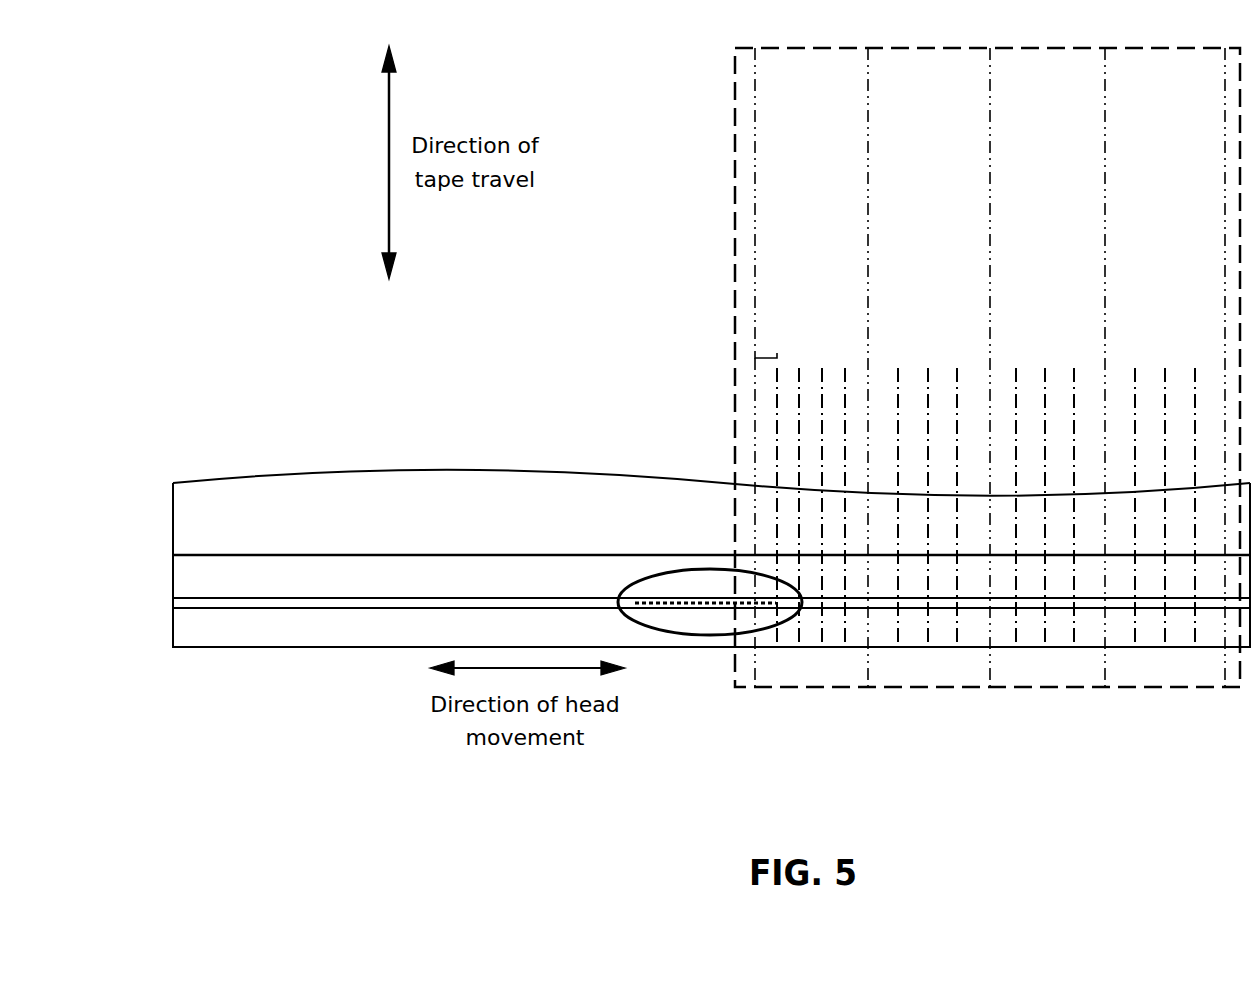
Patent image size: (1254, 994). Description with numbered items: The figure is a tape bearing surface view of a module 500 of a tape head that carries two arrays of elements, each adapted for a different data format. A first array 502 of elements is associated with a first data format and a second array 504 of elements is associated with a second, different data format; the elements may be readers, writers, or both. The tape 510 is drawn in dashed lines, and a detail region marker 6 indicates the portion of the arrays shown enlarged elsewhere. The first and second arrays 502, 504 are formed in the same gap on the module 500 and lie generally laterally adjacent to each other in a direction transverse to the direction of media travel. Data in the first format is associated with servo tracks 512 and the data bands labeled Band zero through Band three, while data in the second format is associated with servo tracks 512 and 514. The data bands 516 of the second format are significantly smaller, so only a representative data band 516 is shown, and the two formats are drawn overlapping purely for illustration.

The module 500 is at (300, 468).
The tape 510 is at (735, 153).
The servo tracks 512 is at (868, 272).
The servo tracks 514 is at (800, 431).
The data band 516 is at (766, 352).
The first array 502 is at (678, 636).
The second array 504 is at (771, 638).
The region shown in FIG. 6 is at (735, 630).